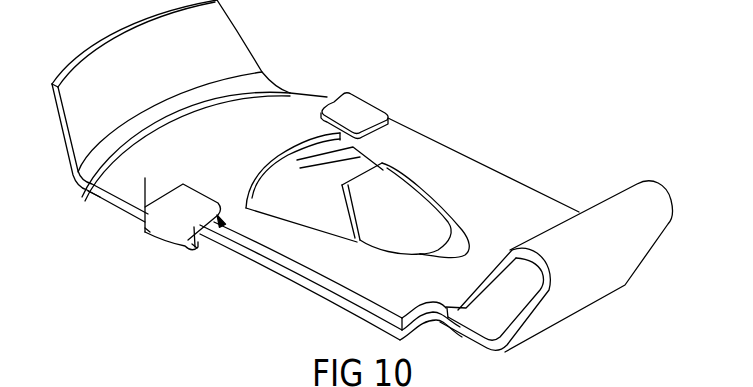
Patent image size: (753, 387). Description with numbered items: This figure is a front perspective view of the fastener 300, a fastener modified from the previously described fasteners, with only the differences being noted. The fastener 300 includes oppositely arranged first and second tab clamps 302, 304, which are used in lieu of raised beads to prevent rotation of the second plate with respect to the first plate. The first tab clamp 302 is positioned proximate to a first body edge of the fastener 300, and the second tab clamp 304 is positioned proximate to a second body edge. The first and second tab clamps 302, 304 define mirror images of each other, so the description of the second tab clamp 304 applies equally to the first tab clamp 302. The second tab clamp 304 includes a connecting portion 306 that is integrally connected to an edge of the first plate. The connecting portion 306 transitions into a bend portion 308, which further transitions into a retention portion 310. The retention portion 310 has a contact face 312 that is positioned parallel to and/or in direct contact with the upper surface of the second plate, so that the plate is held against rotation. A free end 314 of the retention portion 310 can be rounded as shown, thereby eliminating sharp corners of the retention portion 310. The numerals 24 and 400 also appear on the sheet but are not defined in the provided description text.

The fastener 300 is at (445, 93).
The left flange 24 is at (63, 128).
The first tab clamp 302 is at (355, 108).
The free end 314 is at (209, 196).
The second tab clamp 304 is at (167, 211).
The retention portion 310 is at (108, 196).
The bend portion 308 is at (147, 231).
The connecting portion 306 is at (197, 244).
The contact face 312 is at (222, 226).
The assembly 400 is at (568, 383).